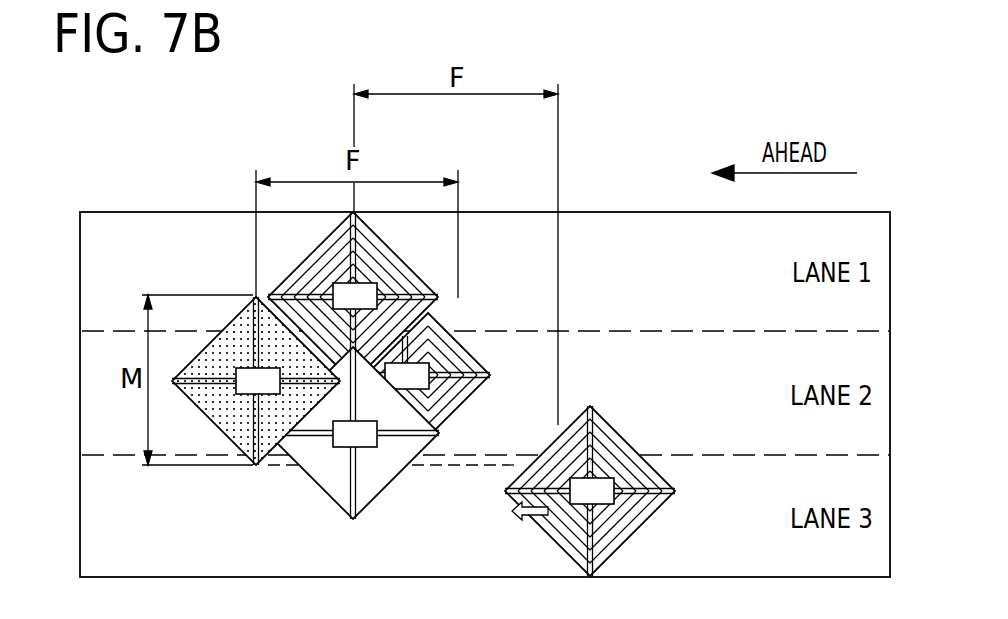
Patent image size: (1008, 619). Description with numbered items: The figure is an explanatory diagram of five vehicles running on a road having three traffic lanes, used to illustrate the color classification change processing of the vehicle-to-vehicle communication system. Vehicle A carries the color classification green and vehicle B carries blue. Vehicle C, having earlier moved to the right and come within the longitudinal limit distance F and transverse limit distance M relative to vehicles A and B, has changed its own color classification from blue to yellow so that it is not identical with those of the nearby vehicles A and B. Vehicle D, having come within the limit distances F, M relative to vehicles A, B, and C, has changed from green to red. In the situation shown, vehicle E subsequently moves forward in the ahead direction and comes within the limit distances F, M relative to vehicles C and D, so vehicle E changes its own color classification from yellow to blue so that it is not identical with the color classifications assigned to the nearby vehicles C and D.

The vehicle A is at (247, 368).
The vehicle B is at (363, 292).
The vehicle C is at (347, 443).
The vehicle D is at (417, 368).
The vehicle E is at (607, 500).